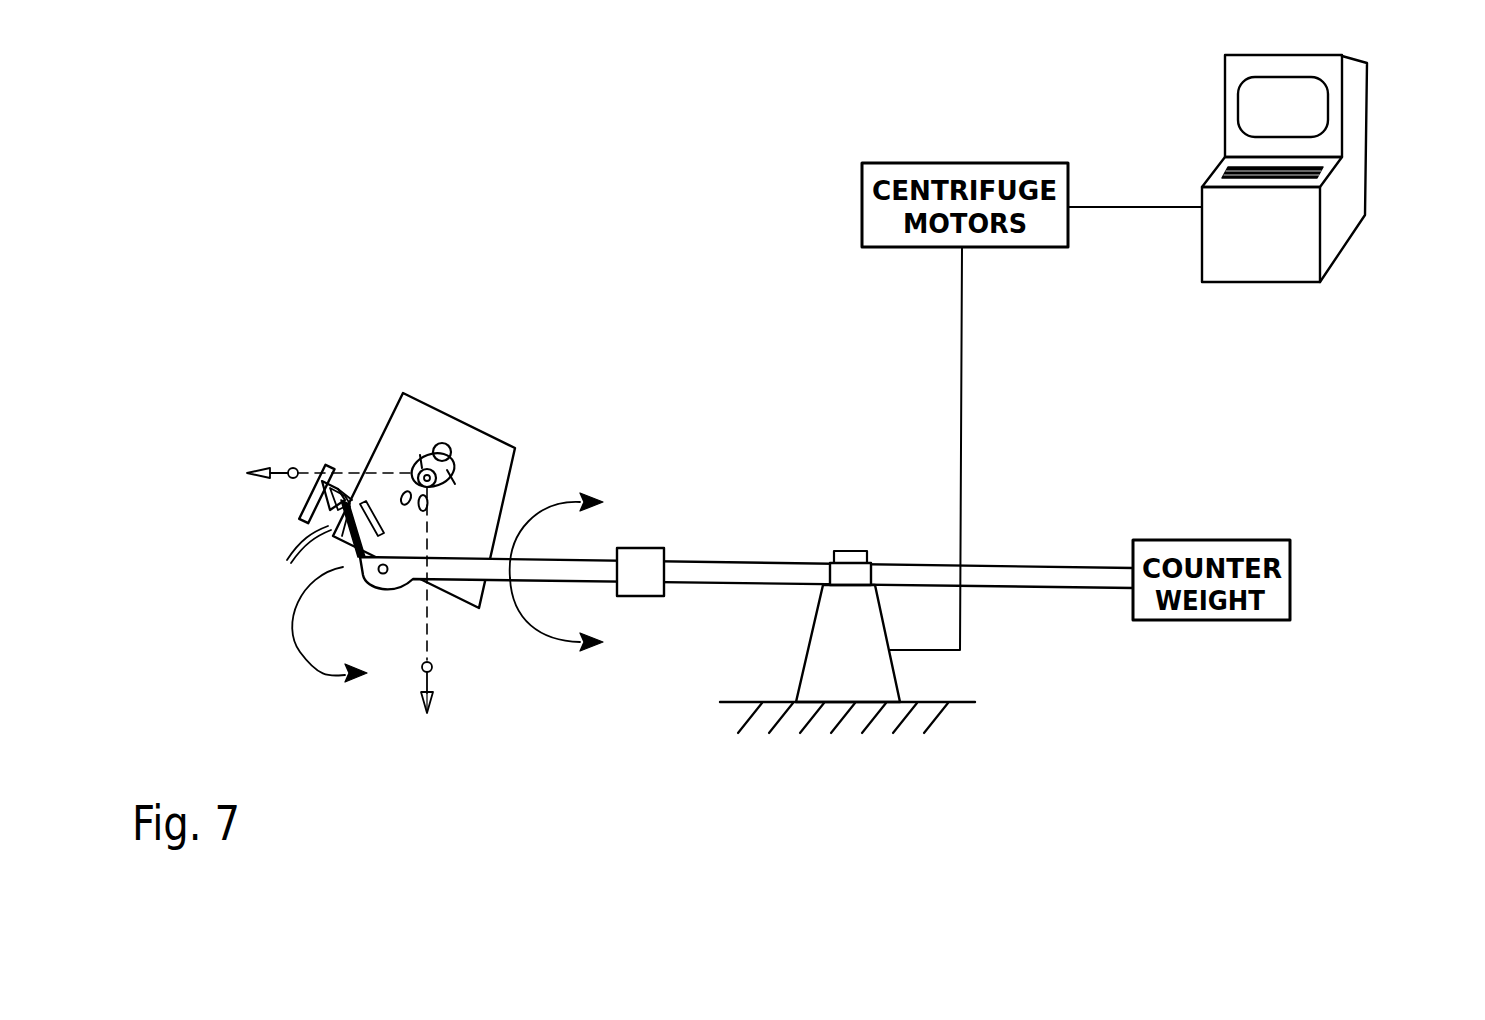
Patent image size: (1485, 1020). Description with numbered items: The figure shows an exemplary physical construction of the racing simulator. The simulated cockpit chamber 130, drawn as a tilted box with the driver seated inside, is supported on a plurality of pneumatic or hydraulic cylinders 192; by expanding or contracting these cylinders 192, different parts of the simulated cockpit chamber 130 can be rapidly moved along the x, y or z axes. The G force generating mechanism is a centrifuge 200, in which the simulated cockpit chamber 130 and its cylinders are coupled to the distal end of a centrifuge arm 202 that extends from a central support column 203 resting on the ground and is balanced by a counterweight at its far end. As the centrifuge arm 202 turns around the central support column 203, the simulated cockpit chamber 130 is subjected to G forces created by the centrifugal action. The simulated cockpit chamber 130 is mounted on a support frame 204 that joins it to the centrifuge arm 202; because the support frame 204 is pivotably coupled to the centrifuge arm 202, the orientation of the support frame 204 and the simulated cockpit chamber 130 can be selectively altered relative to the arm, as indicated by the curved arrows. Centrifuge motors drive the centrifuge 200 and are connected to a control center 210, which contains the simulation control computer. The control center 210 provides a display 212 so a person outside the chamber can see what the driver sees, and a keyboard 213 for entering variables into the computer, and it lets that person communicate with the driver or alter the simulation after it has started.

The simulated cockpit chamber 130 is at (462, 415).
The pneumatic or hydraulic cylinders 192 is at (306, 544).
The centrifuge 200 is at (796, 624).
The centrifuge arm 202 is at (587, 558).
The central support column 203 is at (812, 673).
The support frame 204 is at (306, 516).
The control center 210 is at (1274, 168).
The display 212 is at (1245, 100).
The keyboard 213 is at (1228, 170).